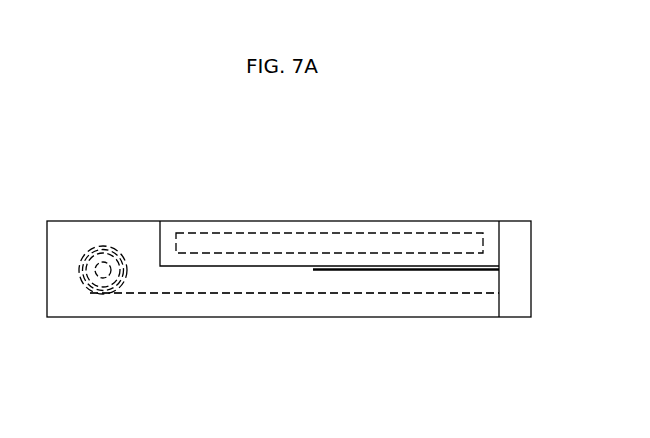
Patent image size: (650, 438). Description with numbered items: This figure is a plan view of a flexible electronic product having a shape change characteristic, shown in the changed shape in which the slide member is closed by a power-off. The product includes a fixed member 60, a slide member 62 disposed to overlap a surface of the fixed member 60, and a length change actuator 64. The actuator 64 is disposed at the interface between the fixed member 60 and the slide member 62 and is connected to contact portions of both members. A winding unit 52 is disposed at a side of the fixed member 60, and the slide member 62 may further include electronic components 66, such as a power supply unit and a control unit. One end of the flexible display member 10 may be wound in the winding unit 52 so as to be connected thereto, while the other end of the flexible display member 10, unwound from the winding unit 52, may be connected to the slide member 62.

The fixed member 60 is at (105, 226).
The slide member 62 is at (269, 225).
The electronic components 66 is at (377, 233).
The length change actuator 64 is at (408, 271).
The winding unit 52 is at (90, 289).
The flexible display member 10 is at (303, 294).